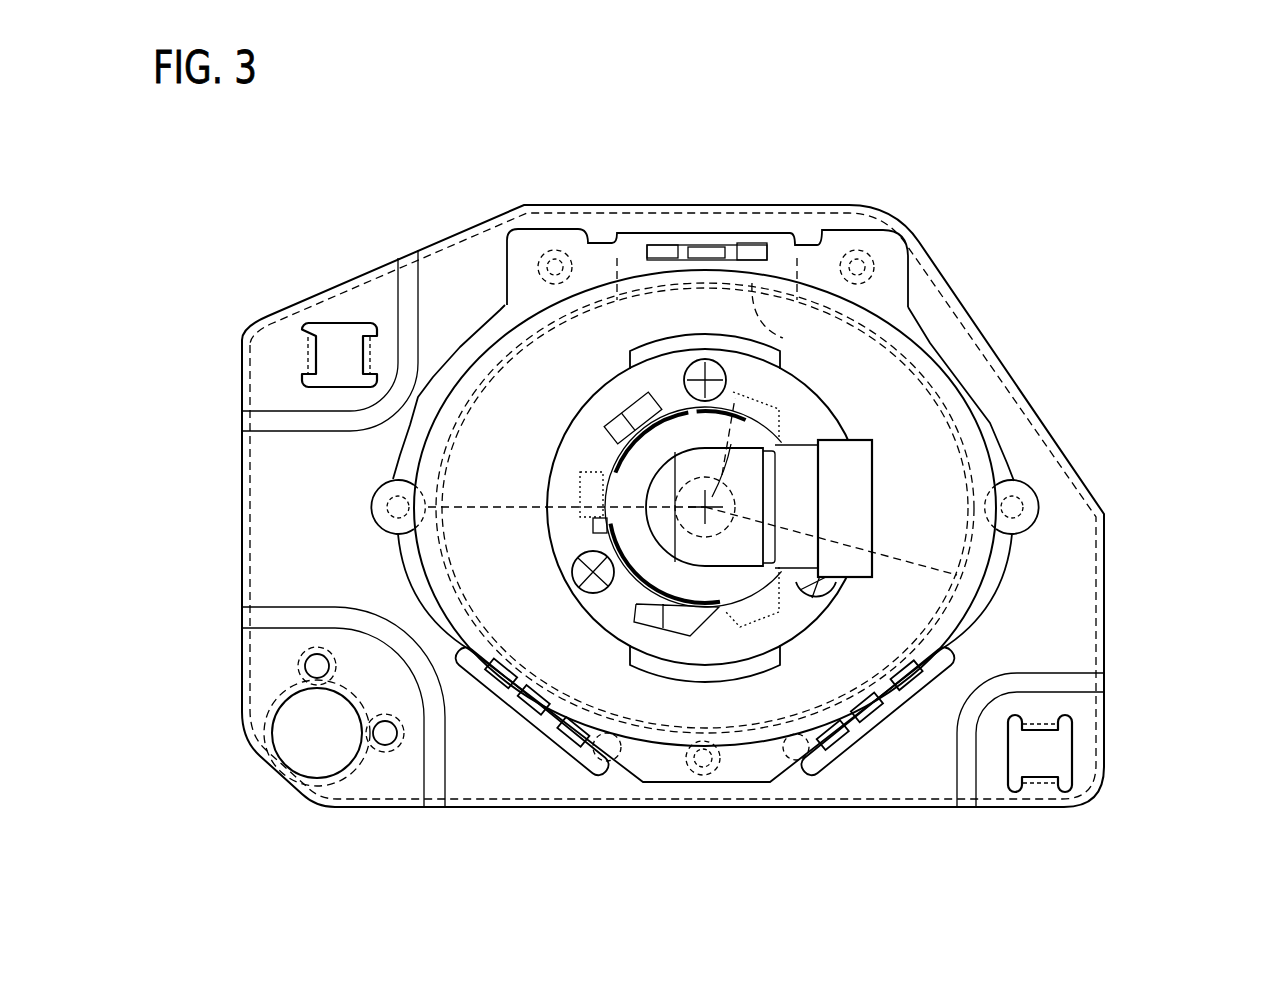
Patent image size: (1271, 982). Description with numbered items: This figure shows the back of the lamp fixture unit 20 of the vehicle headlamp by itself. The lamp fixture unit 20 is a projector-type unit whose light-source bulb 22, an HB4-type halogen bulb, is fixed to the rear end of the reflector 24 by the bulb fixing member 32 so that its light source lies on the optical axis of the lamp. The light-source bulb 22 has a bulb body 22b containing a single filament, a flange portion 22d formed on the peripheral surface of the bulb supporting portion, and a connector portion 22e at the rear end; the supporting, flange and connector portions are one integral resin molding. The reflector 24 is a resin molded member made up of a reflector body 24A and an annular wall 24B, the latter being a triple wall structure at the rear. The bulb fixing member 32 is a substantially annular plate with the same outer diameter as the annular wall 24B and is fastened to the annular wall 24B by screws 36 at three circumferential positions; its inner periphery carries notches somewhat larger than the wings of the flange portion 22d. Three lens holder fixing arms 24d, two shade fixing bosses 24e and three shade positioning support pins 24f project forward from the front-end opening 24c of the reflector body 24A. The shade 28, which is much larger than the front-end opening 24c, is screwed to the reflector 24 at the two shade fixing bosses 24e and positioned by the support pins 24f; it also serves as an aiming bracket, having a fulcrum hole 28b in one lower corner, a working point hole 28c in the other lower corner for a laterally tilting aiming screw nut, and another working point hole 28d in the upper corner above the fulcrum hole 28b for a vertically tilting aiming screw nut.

The lamp fixture unit 20 is at (1100, 207).
The light-source bulb 22 is at (655, 468).
The bulb body 22b is at (722, 530).
The flange portion 22d is at (557, 450).
The connector portion 22e is at (832, 482).
The reflector 24 is at (495, 303).
The reflector body 24A is at (1010, 438).
The annular wall 24B is at (828, 405).
The front-end opening 24c is at (780, 338).
The lens holder fixing arms 24d is at (753, 243).
The shade fixing bosses 24e is at (372, 502).
The shade positioning support pins 24f is at (548, 255).
The shade 28 is at (963, 308).
The fulcrum hole 28b is at (340, 703).
The working point hole 28c is at (1038, 726).
The working point hole 28d is at (363, 353).
The bulb fixing member 32 is at (551, 552).
The screws 36 is at (585, 594).